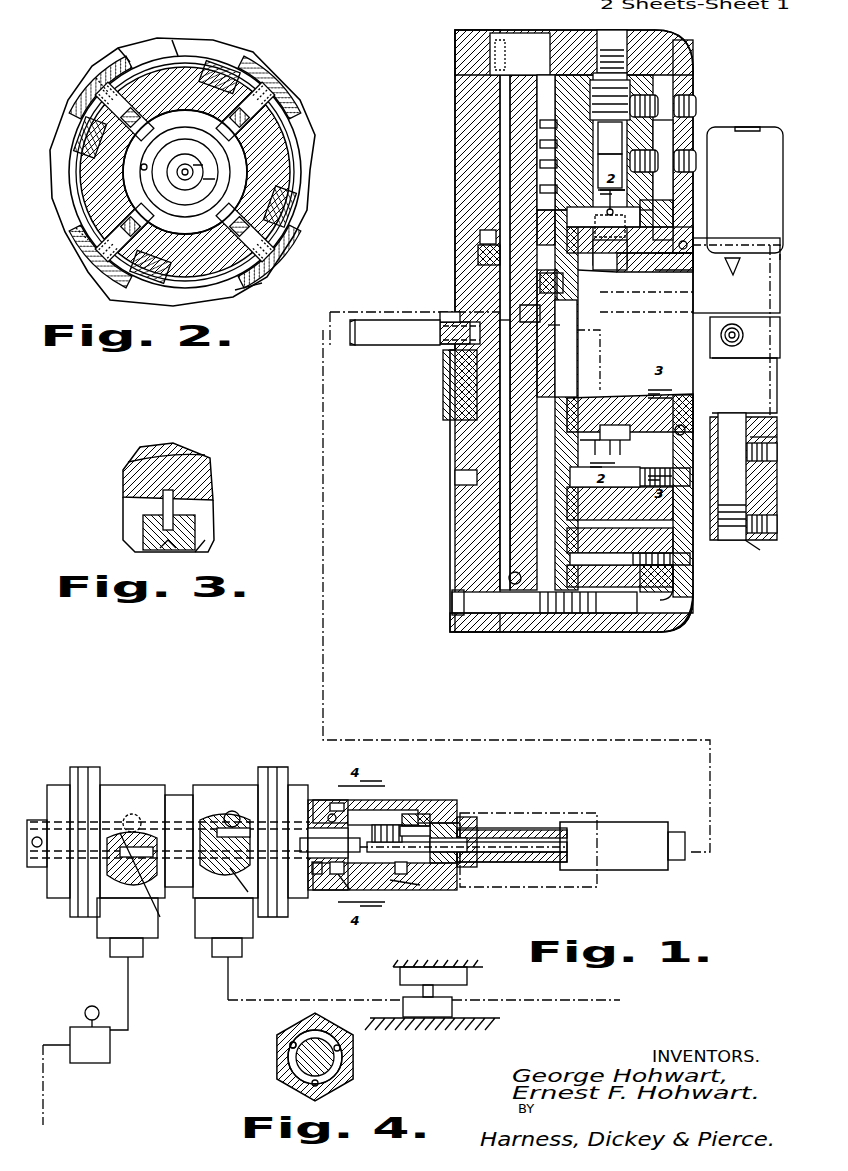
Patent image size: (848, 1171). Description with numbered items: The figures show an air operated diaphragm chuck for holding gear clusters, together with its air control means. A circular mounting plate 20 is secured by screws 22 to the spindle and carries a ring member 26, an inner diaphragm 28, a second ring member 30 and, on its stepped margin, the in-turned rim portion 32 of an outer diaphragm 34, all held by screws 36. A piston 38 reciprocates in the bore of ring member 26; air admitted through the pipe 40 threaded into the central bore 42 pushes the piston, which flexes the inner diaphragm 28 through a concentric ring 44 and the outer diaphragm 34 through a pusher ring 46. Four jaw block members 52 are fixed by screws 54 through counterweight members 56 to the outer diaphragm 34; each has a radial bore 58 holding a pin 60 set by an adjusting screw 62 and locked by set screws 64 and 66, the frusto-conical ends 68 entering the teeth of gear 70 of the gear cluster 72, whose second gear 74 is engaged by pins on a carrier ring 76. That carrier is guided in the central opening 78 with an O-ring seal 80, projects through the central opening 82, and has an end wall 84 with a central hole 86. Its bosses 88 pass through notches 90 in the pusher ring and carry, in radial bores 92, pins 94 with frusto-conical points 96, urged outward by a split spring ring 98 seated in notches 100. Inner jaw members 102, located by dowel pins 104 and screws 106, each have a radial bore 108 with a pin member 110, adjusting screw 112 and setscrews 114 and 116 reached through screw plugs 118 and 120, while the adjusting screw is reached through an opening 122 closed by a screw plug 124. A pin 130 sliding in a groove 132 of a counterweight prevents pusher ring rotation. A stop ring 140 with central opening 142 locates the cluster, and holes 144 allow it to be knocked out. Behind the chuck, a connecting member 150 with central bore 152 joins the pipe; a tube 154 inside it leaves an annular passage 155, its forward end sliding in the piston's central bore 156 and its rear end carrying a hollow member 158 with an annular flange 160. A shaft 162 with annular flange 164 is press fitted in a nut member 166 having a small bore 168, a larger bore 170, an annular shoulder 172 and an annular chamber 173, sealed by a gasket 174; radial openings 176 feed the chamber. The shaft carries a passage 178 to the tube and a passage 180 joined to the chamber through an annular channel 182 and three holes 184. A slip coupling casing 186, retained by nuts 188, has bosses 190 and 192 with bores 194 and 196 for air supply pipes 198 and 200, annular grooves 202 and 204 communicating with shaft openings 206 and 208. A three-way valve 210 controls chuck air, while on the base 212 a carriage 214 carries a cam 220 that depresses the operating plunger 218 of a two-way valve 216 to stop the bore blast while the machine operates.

In FIG. 1, the mounting plate 20 is at (457, 78).
In FIG. 1, the screws 22 is at (470, 145).
In FIG. 1, the ring member 26 is at (470, 40).
In FIG. 1, the inner diaphragm 28 is at (548, 92).
In FIG. 1, the second ring member 30 is at (585, 632).
In FIG. 1, the in-turned rim portion 32 is at (650, 632).
In FIG. 1, the outer diaphragm 34 is at (693, 578).
In FIG. 1, the screws 36 is at (452, 605).
In FIG. 1, the piston 38 is at (500, 440).
In FIG. 1, the pipe 40 is at (445, 345).
In FIG. 1, the threaded central bore 42 is at (440, 318).
In FIG. 1, the concentric ring 44 is at (480, 238).
In FIG. 2, the pusher ring 46 is at (290, 200).
In FIG. 3, the pusher ring 46 is at (208, 492).
In FIG. 1, the pusher ring 46 is at (670, 238).
In FIG. 1, the jaw block member 52 is at (757, 140).
In FIG. 2, the screws 54 is at (205, 178).
In FIG. 3, the screws 54 is at (165, 550).
In FIG. 1, the screws 54 is at (690, 558).
In FIG. 3, the counterweight member 56 is at (202, 550).
In FIG. 1, the counterweight member 56 is at (690, 605).
In FIG. 1, the radial bore 58 is at (760, 435).
In FIG. 1, the pin 60 is at (732, 476).
In FIG. 1, the adjusting screw 62 is at (748, 545).
In FIG. 1, the set screw 64 is at (768, 440).
In FIG. 1, the set screw 66 is at (770, 535).
In FIG. 1, the frusto-conical ends 68 is at (735, 276).
In FIG. 1, the gear 70 is at (778, 262).
In FIG. 1, the gear cluster 72 is at (775, 315).
In FIG. 1, the second gear 74 is at (646, 302).
In FIG. 2, the carrier ring 76 is at (300, 150).
In FIG. 3, the carrier ring 76 is at (203, 466).
In FIG. 1, the carrier ring 76 is at (660, 262).
In FIG. 1, the central opening 78 is at (690, 248).
In FIG. 1, the O-ring seal 80 is at (693, 250).
In FIG. 1, the central opening 82 is at (545, 255).
In FIG. 1, the end wall 84 is at (570, 300).
In FIG. 2, the central hole 86 is at (212, 165).
In FIG. 1, the central hole 86 is at (574, 348).
In FIG. 2, the bosses 88 is at (75, 108).
In FIG. 1, the bosses 88 is at (650, 212).
In FIG. 2, the notches 90 is at (235, 72).
In FIG. 1, the notches 90 is at (665, 222).
In FIG. 1, the radial bore 92 is at (610, 226).
In FIG. 2, the pin 94 is at (114, 115).
In FIG. 1, the pin 94 is at (545, 218).
In FIG. 2, the frusto-conical point 96 is at (215, 125).
In FIG. 1, the frusto-conical point 96 is at (601, 352).
In FIG. 2, the split spring ring 98 is at (178, 45).
In FIG. 1, the split spring ring 98 is at (622, 203).
In FIG. 2, the notches 100 is at (120, 58).
In FIG. 1, the notches 100 is at (617, 440).
In FIG. 2, the jaw members 102 is at (80, 78).
In FIG. 1, the jaw members 102 is at (630, 95).
In FIG. 1, the dowel pins 104 is at (552, 124).
In FIG. 1, the screws 106 is at (552, 145).
In FIG. 1, the radial bore 108 is at (610, 138).
In FIG. 1, the pin member 110 is at (610, 171).
In FIG. 1, the adjusting screw 112 is at (625, 58).
In FIG. 1, the setscrew 114 is at (660, 158).
In FIG. 1, the setscrew 116 is at (697, 107).
In FIG. 1, the screw plug 118 is at (697, 160).
In FIG. 1, the screw plug 120 is at (660, 103).
In FIG. 1, the opening 122 is at (645, 40).
In FIG. 1, the screw plug 124 is at (510, 52).
In FIG. 3, the pin 130 is at (160, 500).
In FIG. 1, the pin 130 is at (683, 425).
In FIG. 3, the groove 132 is at (150, 522).
In FIG. 2, the ring 140 is at (248, 292).
In FIG. 1, the ring 140 is at (505, 380).
In FIG. 2, the central opening 142 is at (141, 169).
In FIG. 1, the central opening 142 is at (560, 345).
In FIG. 1, the holes 144 is at (500, 405).
In FIG. 1, the connecting member 150 is at (445, 802).
In FIG. 1, the central bore 152 is at (462, 820).
In FIG. 1, the tube 154 is at (375, 320).
In FIG. 1, the annular passage 155 is at (510, 842).
In FIG. 1, the central bore 156 is at (530, 318).
In FIG. 1, the hollow member 158 is at (395, 823).
In FIG. 1, the annular flange 160 is at (378, 812).
In FIG. 1, the shaft 162 is at (214, 812).
In FIG. 4, the shaft 162 is at (297, 1067).
In FIG. 1, the annular flange 164 is at (340, 875).
In FIG. 1, the nut member 166 is at (315, 888).
In FIG. 4, the nut member 166 is at (350, 1073).
In FIG. 1, the small bore 168 is at (312, 870).
In FIG. 1, the larger bore 170 is at (410, 808).
In FIG. 1, the annular shoulder 172 is at (342, 797).
In FIG. 1, the annular chamber 173 is at (395, 885).
In FIG. 1, the gasket 174 is at (410, 880).
In FIG. 1, the radial openings 176 is at (425, 814).
In FIG. 1, the passage 178 is at (313, 828).
In FIG. 4, the passage 178 is at (290, 1047).
In FIG. 1, the passage 180 is at (300, 840).
In FIG. 1, the annular channel 182 is at (332, 812).
In FIG. 1, the holes 184 is at (340, 880).
In FIG. 4, the holes 184 is at (340, 1050).
In FIG. 1, the casing 186 is at (150, 790).
In FIG. 1, the nuts 188 is at (32, 820).
In FIG. 1, the boss 190 is at (105, 930).
In FIG. 1, the boss 192 is at (210, 935).
In FIG. 1, the bore 194 is at (125, 882).
In FIG. 1, the bore 196 is at (228, 880).
In FIG. 1, the air supply pipe 198 is at (118, 955).
In FIG. 1, the air supply pipe 200 is at (235, 955).
In FIG. 1, the annular groove 202 is at (160, 912).
In FIG. 1, the annular groove 204 is at (242, 885).
In FIG. 1, the opening 206 is at (128, 832).
In FIG. 1, the opening 208 is at (233, 811).
In FIG. 1, the three-way valve 210 is at (95, 1063).
In FIG. 1, the base 212 is at (490, 1020).
In FIG. 1, the carriage 214 is at (470, 972).
In FIG. 1, the two-way valve 216 is at (442, 1014).
In FIG. 1, the operating plunger 218 is at (423, 992).
In FIG. 1, the cam 220 is at (467, 985).